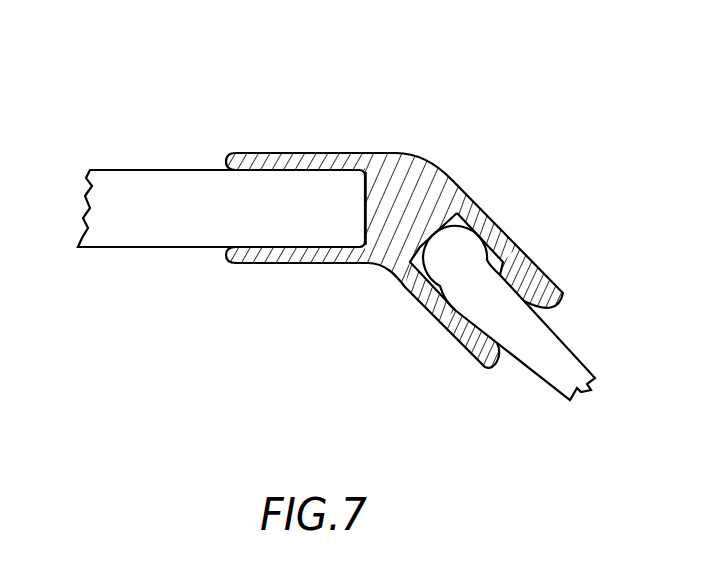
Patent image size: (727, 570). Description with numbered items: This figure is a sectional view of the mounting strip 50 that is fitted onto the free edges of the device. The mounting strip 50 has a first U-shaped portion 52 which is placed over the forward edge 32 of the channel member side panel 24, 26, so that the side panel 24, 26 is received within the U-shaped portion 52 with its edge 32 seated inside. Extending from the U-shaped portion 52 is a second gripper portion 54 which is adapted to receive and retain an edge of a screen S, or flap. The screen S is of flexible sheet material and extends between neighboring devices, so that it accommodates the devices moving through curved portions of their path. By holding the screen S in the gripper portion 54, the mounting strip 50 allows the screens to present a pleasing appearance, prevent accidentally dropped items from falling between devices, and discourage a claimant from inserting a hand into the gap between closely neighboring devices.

The mounting strip 50 is at (413, 153).
The first U-shaped portion 52 is at (326, 153).
The second gripper portion 54 is at (522, 250).
The side panel 24 is at (205, 250).
The side panel 26 is at (140, 222).
The forward edge 32 is at (372, 215).
The screen S is at (557, 362).